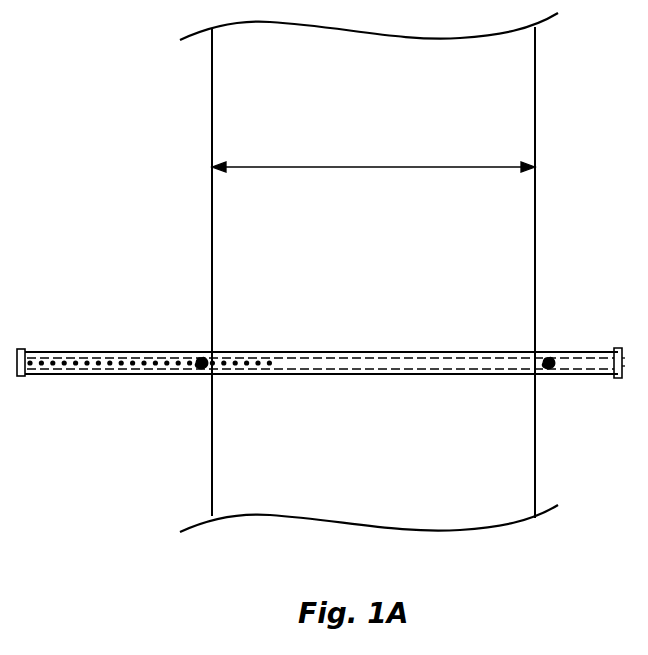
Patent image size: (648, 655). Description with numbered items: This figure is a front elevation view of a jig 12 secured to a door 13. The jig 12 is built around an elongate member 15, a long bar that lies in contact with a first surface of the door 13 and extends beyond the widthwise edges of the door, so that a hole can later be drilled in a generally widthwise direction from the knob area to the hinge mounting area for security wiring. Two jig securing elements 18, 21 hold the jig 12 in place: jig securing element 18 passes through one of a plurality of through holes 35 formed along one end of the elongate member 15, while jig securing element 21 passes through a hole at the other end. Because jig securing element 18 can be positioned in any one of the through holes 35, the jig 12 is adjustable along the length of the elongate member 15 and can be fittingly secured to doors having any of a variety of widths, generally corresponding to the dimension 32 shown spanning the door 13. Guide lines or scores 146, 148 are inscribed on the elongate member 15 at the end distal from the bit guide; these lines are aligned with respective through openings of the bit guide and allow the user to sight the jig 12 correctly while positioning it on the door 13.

The jig 12 is at (321, 388).
The door 13 is at (346, 265).
The elongate member 15 is at (243, 358).
The jig securing element 18 is at (202, 359).
The jig securing element 21 is at (550, 369).
The dimension 32 is at (278, 166).
The through holes 35 is at (64, 361).
The guide line 146 is at (168, 357).
The guide line 148 is at (160, 371).